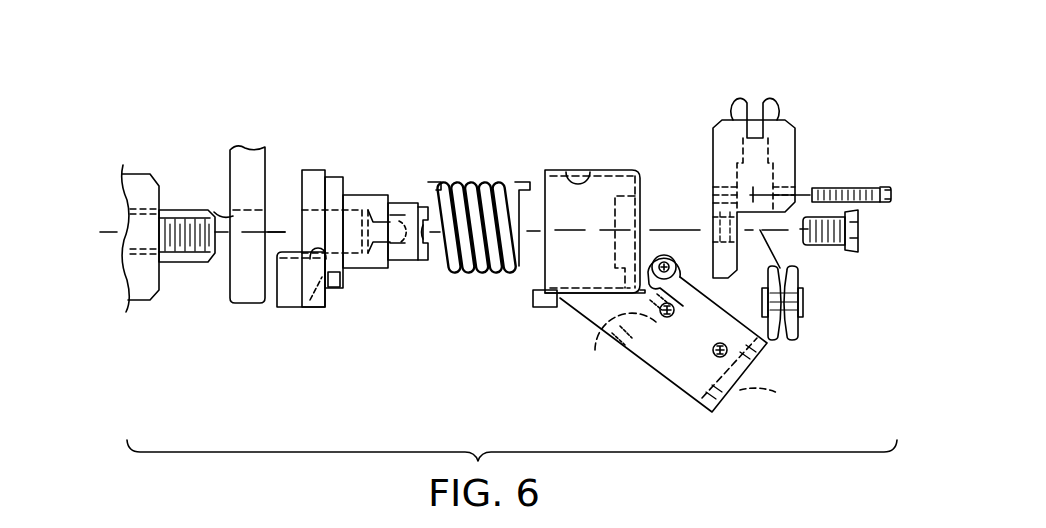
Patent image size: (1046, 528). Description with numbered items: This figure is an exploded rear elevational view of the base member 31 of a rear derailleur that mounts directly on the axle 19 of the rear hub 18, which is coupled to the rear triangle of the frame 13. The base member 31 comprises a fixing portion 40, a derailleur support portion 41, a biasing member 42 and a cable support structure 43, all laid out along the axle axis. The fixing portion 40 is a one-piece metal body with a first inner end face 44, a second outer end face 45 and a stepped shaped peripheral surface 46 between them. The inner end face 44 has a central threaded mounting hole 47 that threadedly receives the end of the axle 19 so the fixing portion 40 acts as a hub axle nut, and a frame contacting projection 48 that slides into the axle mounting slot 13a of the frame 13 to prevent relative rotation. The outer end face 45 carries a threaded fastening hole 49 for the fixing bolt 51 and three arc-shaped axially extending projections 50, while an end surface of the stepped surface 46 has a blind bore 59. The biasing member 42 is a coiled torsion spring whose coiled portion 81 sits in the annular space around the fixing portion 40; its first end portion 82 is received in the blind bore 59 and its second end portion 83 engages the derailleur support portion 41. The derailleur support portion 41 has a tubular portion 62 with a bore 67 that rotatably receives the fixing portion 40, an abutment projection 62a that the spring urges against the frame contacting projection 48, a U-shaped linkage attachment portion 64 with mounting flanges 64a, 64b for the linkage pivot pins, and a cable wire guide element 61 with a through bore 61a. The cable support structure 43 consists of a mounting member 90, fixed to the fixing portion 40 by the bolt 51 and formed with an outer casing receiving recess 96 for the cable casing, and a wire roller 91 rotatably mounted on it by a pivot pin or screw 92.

The frame 13 is at (243, 146).
The axle mounting slot 13a is at (214, 210).
The rear hub 18 is at (139, 173).
The axle 19 is at (176, 210).
The base member 31 is at (647, 254).
The fixing portion 40 is at (362, 235).
The derailleur support portion 41 is at (560, 336).
The biasing member 42 is at (474, 174).
The cable support structure 43 is at (812, 192).
The first inner end face 44 is at (296, 186).
The second outer end face 45 is at (425, 206).
The stepped shaped peripheral surface 46 is at (365, 272).
The threaded mounting hole 47 is at (313, 300).
The frame contacting projection 48 is at (290, 297).
The threaded fastening hole 49 is at (414, 270).
The axially extending projections 50 is at (427, 250).
The fixing bolt 51 is at (831, 250).
The blind bore 59 is at (340, 292).
The cable wire guide element 61 is at (676, 258).
The through bore 61a is at (662, 254).
The tubular portion 62 is at (557, 170).
The abutment projection 62a is at (542, 308).
The linkage attachment portion 64 is at (691, 302).
The mounting flange 64a is at (616, 344).
The mounting flange 64b is at (781, 392).
The bore 67 is at (590, 172).
The coiled portion 81 is at (476, 183).
The first end portion 82 is at (433, 182).
The second end portion 83 is at (520, 183).
The mounting member 90 is at (792, 123).
The wire roller 91 is at (803, 326).
The pivot pin or screw 92 is at (854, 187).
The outer casing receiving recess 96 is at (755, 100).